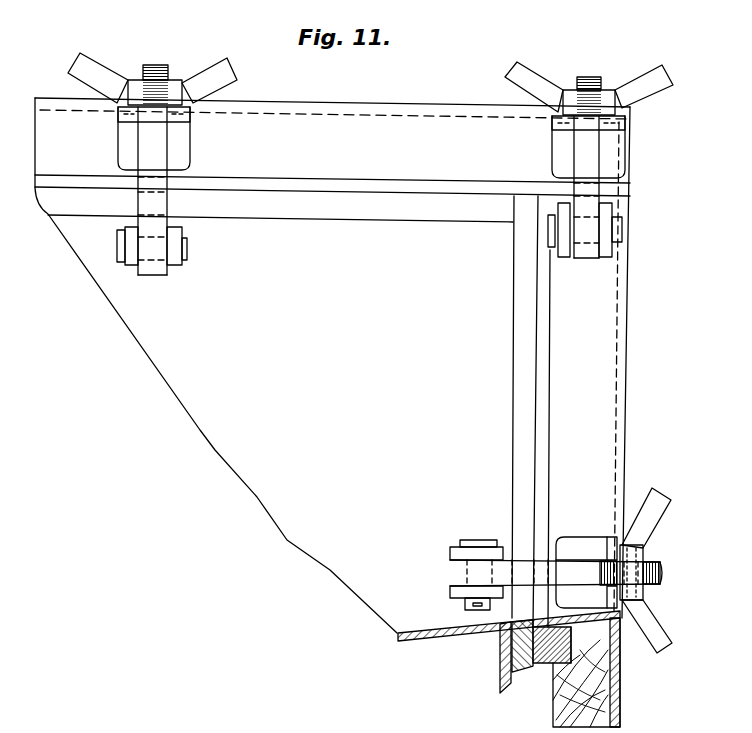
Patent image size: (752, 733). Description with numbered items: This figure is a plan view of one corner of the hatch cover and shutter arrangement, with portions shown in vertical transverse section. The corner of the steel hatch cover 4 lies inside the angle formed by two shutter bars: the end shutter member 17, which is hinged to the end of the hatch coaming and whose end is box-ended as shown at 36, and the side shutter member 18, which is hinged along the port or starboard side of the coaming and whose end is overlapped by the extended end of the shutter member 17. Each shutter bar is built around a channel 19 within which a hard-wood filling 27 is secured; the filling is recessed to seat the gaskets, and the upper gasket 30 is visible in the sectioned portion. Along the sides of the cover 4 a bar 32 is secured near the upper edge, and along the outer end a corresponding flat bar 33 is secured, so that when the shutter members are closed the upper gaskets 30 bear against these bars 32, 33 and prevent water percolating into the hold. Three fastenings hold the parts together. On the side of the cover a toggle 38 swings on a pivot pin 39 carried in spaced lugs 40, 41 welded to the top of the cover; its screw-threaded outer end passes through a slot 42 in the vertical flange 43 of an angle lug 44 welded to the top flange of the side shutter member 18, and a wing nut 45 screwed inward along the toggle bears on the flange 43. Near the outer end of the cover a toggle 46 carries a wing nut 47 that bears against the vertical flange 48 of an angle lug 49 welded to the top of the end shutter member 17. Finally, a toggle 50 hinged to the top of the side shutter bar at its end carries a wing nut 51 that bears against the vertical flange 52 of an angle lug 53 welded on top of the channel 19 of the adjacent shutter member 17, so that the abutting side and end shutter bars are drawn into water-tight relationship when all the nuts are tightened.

The hatch cover 4 is at (216, 365).
The end shutter member 17 is at (332, 129).
The side shutter member 18 is at (592, 407).
The channel 19 is at (386, 140).
The hard-wood filling 27 is at (598, 707).
The upper gasket 30 is at (256, 186).
The bar 32 is at (523, 457).
The flat bar 33 is at (355, 208).
The box end 36 is at (630, 180).
The toggle 38 is at (525, 572).
The pivot pin 39 is at (475, 570).
The lug 40 is at (460, 545).
The lug 41 is at (460, 594).
The slot 42 is at (608, 550).
The vertical flange 43 is at (613, 600).
The angle lug 44 is at (580, 535).
The wing nut 45 is at (653, 503).
The toggle 46 is at (155, 202).
The wing nut 47 is at (210, 82).
The vertical flange 48 is at (214, 108).
The angle lug 49 is at (190, 143).
The toggle 50 is at (587, 188).
The wing nut 51 is at (542, 83).
The vertical flange 52 is at (615, 125).
The angle lug 53 is at (563, 145).